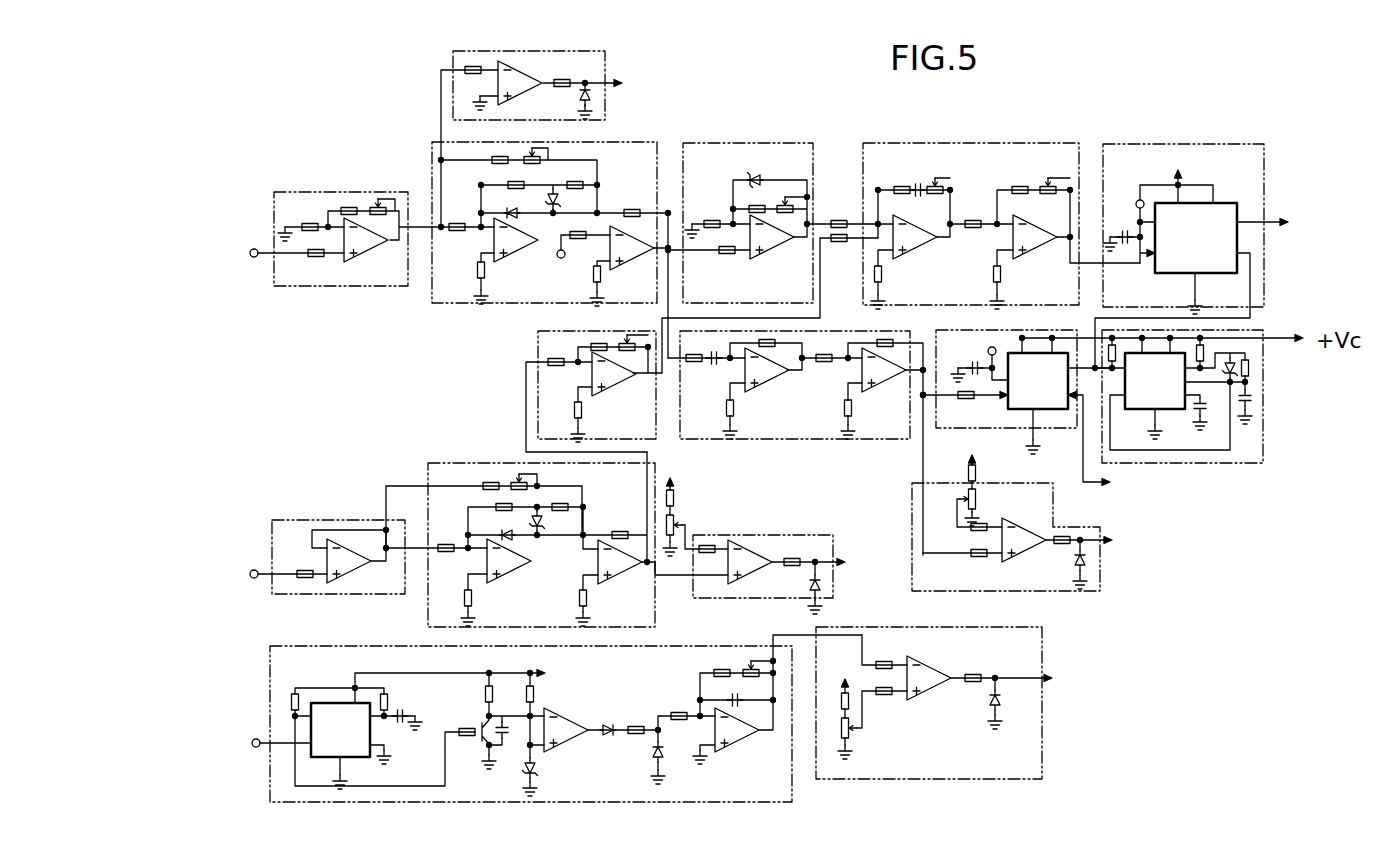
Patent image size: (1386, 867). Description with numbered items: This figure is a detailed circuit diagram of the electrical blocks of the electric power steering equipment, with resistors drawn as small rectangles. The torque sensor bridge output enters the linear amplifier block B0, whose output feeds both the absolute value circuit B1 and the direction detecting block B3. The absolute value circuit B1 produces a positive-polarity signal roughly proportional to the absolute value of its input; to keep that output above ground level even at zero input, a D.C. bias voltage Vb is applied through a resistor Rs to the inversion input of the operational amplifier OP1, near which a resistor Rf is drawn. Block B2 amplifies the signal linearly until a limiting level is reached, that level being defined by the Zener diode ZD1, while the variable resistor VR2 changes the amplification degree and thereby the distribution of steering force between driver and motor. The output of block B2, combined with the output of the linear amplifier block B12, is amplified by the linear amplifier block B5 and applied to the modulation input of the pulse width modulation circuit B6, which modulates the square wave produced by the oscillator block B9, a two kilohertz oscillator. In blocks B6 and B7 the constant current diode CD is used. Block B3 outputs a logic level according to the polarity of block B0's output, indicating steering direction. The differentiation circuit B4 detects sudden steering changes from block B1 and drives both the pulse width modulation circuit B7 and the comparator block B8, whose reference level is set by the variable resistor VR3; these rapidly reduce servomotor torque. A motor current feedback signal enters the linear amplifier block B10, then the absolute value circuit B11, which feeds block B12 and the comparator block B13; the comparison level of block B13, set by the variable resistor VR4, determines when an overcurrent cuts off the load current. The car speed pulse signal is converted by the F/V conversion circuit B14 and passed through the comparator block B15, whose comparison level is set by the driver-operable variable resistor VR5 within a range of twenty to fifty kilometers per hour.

The linear amplifier block B0 is at (318, 192).
The absolute value circuit B1 is at (551, 229).
The function generator amplifier block B2 is at (772, 201).
The direction detecting block B3 is at (596, 52).
The differentiation circuit B4 is at (875, 441).
The linear amplifier block B5 is at (898, 143).
The pulse width modulation circuit B6 is at (1120, 144).
The pulse width modulation circuit B7 is at (1068, 428).
The comparator block B8 is at (1023, 530).
The oscillator block B9 is at (1272, 330).
The linear amplifier block B10 is at (332, 520).
The absolute value circuit B11 is at (475, 463).
The linear amplifier block B12 is at (538, 340).
The comparator block B13 is at (760, 535).
The F/V conversion circuit B14 is at (726, 648).
The comparator block B15 is at (943, 682).
The resistor Rf is at (632, 199).
The resistor Rs is at (585, 246).
The D.C. bias voltage Vb is at (558, 268).
The operational amplifier OP1 is at (636, 259).
The Zener diode ZD1 is at (758, 176).
The variable resistor VR2 is at (790, 218).
The variable resistor VR3 is at (991, 500).
The variable resistor VR4 is at (679, 520).
The variable resistor VR5 is at (875, 723).
The constant current diode CD is at (1134, 201).